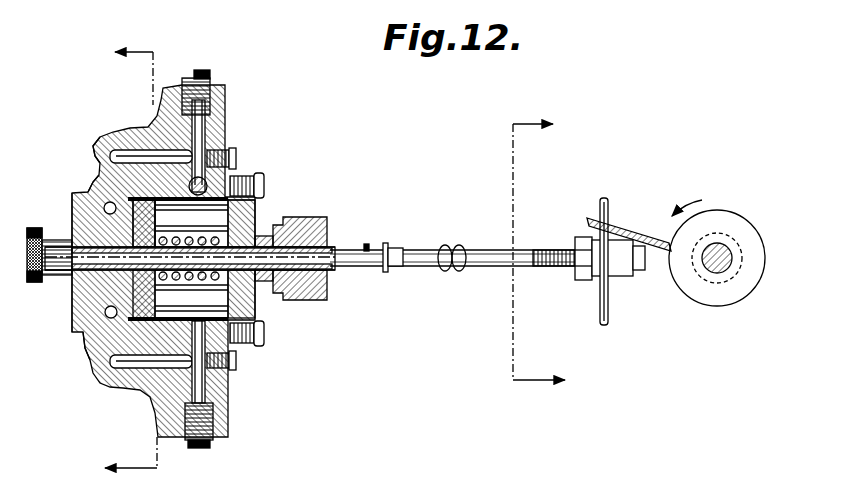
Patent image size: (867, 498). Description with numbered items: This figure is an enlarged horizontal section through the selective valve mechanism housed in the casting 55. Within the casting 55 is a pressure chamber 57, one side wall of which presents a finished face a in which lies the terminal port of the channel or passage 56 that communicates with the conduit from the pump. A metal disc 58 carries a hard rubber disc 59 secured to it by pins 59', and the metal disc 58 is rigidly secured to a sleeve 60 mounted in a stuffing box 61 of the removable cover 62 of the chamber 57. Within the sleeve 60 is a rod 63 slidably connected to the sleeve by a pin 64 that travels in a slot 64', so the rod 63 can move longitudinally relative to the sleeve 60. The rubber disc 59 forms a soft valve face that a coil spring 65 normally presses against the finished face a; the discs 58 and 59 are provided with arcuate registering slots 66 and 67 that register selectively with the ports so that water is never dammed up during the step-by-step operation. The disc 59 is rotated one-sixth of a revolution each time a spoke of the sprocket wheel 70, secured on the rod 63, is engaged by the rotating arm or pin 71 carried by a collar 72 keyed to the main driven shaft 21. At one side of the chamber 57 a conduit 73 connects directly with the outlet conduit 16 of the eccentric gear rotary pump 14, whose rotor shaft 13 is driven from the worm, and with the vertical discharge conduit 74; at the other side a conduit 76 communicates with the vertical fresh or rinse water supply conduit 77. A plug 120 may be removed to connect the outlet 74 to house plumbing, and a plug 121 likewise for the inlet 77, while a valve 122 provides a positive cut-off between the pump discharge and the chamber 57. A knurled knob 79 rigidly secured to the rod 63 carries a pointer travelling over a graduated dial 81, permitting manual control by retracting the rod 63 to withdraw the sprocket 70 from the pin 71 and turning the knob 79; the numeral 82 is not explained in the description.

The outlet conduit 16 is at (212, 82).
The conduit 73 is at (205, 133).
The vertical discharge conduit 74 is at (127, 148).
The plug 120 is at (236, 157).
The valve 122 is at (262, 177).
The pins 59' is at (207, 199).
The flange lug 82 is at (95, 176).
The graduated dial 81 is at (64, 192).
The finished face a is at (98, 228).
The metal disc 58 is at (168, 238).
The channel or passage 56 is at (100, 268).
The knurled knob 79 is at (56, 283).
The hard rubber disc 59 is at (134, 290).
The arcuate registering slot 67 is at (128, 292).
The arcuate registering slot 66 is at (168, 291).
The vertical fresh or rinse water supply conduit 77 is at (148, 370).
The conduit 76 is at (205, 382).
The casting 55 is at (214, 405).
The plug 121 is at (237, 361).
The removable cover 62 is at (242, 204).
The coil spring 65 is at (290, 218).
The pressure chamber 57 is at (250, 226).
The sleeve 60 is at (335, 268).
The stuffing box 61 is at (305, 298).
The slot 64' is at (382, 236).
The pin 64 is at (391, 275).
The rod 63 is at (500, 267).
The sprocket wheel 70 is at (603, 268).
The rotating arm or pin 71 is at (647, 238).
The main driven shaft 21 is at (721, 245).
The collar 72 is at (724, 297).
The rotor shaft 13 is at (126, 264).
The eccentric gear rotary pump 14 is at (539, 253).